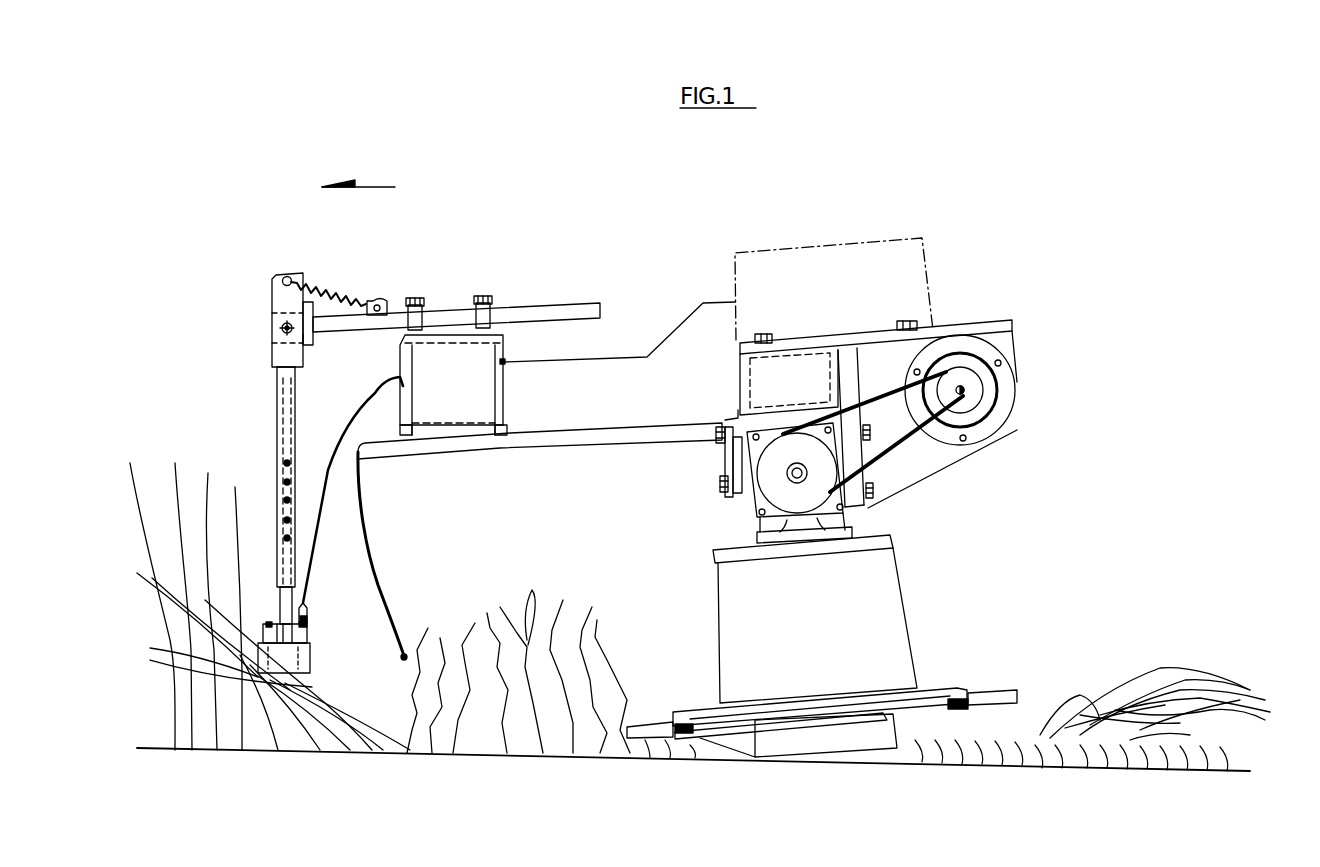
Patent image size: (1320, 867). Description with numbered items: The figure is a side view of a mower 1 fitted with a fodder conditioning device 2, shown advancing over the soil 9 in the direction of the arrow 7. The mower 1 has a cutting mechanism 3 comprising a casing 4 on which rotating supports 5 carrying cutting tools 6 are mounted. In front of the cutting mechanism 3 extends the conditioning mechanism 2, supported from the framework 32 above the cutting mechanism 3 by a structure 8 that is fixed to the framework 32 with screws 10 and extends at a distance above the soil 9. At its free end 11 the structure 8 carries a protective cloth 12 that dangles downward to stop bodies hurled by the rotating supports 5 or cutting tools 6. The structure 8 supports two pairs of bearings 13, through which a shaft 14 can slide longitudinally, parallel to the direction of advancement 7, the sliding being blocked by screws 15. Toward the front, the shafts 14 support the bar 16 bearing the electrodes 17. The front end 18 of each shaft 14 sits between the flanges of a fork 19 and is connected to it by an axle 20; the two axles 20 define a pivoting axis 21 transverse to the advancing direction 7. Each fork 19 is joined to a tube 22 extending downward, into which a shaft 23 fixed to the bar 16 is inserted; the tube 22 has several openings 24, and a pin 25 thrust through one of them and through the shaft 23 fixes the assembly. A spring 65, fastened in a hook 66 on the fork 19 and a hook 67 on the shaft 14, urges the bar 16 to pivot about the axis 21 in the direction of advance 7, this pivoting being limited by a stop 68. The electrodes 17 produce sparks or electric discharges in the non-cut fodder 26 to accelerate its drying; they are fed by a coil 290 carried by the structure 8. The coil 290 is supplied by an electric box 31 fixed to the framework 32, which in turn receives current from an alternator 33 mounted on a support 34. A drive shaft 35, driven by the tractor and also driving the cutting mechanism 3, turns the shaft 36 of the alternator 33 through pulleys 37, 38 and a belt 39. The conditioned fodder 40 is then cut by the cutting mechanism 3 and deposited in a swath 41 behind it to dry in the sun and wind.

The mower 1 is at (970, 562).
The fodder conditioning device 2 is at (213, 425).
The cutting mechanism 3 is at (700, 660).
The casing 4 is at (805, 745).
The rotating supports 5 is at (922, 693).
The cutting tools 6 is at (642, 726).
The arrow of advancing direction 7 is at (373, 186).
The structure 8 is at (617, 447).
The soil 9 is at (578, 825).
The screws 10 is at (716, 437).
The free end 11 is at (360, 455).
The protective cloth 12 is at (380, 590).
The bearings 13 is at (420, 322).
The shaft 14 is at (578, 313).
The screws 15 is at (411, 298).
The bar 16 is at (246, 663).
The electrodes 17 is at (302, 641).
The front end 18 is at (321, 336).
The fork 19 is at (275, 358).
The axle 20 is at (281, 326).
The pivoting axis 21 is at (286, 322).
The tube 22 is at (277, 398).
The shaft 23 is at (280, 605).
The openings 24 is at (277, 462).
The pin 25 is at (297, 498).
The non-cut fodder 26 is at (180, 545).
The electric box 31 is at (893, 240).
The framework 32 is at (740, 380).
The alternator 33 is at (988, 397).
The support 34 is at (994, 320).
The drive shaft 35 is at (790, 480).
The alternator shaft 36 is at (966, 396).
The pulley 37 is at (803, 500).
The pulley 38 is at (972, 384).
The belt 39 is at (915, 455).
The conditioned fodder 40 is at (488, 623).
The swath 41 is at (1160, 665).
The spring 65 is at (336, 293).
The hook 66 is at (287, 276).
The hook 67 is at (376, 304).
The stop 68 is at (314, 306).
The coil 290 is at (480, 415).